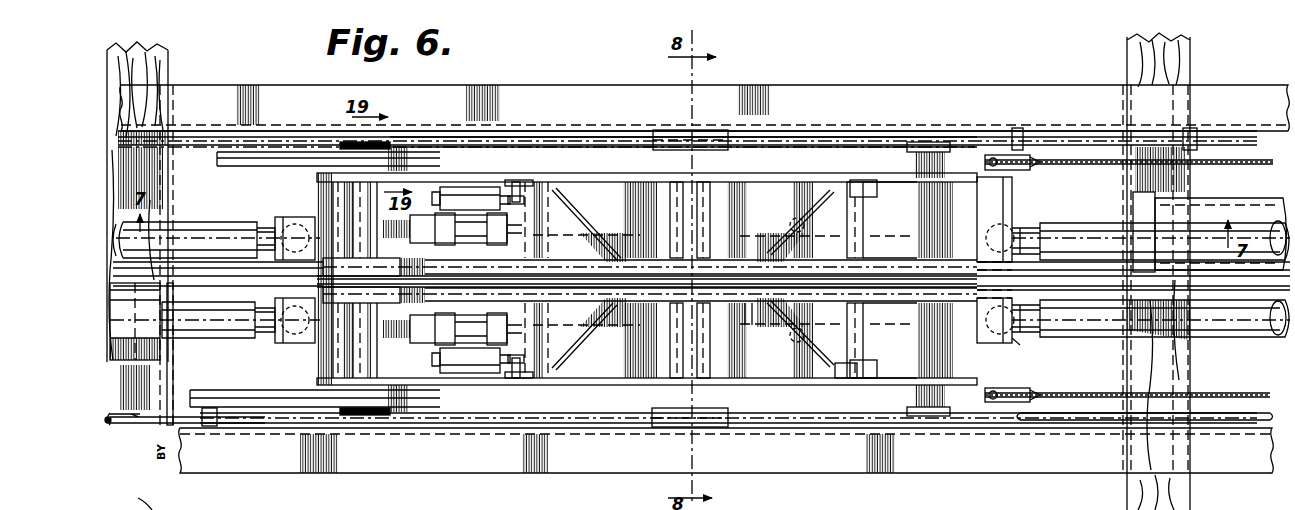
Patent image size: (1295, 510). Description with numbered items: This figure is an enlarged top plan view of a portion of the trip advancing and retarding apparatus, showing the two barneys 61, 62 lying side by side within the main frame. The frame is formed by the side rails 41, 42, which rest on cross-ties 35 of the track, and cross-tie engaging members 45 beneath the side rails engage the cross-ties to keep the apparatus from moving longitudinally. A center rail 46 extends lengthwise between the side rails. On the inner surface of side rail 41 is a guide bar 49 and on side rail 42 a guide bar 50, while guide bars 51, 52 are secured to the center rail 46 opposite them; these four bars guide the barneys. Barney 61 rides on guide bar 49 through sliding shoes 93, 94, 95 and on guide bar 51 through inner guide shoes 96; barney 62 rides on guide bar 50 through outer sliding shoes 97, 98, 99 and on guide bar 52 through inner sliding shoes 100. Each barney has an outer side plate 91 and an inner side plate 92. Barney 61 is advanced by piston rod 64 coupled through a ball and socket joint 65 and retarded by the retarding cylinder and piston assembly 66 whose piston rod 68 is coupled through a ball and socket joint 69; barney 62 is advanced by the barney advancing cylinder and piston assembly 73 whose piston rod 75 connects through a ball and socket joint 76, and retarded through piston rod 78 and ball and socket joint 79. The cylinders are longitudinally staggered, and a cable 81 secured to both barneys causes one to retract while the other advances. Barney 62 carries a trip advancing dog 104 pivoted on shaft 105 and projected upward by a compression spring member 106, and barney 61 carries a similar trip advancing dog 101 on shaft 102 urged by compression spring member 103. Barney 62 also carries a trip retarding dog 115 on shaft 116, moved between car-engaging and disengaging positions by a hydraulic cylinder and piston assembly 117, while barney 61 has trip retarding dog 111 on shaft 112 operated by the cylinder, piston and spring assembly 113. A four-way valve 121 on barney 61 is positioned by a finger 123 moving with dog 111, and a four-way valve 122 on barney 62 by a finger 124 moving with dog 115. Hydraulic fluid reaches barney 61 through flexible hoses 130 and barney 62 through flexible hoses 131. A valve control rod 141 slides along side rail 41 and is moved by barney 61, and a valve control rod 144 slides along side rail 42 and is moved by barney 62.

The cross-tie 35 is at (170, 64).
The side rail 42 is at (592, 87).
The side rail 41 is at (467, 463).
The valve control rod 144 is at (190, 148).
The flexible hoses 131 is at (243, 170).
The flexible hoses 130 is at (278, 393).
The outer sliding shoe 98 is at (390, 141).
The sliding shoe 95 is at (356, 415).
The guide bar 49 is at (473, 418).
The valve control rod 141 is at (240, 422).
The outer sliding shoe 97 is at (666, 150).
The sliding shoe 93 is at (722, 410).
The outer sliding shoe 99 is at (927, 140).
The sliding shoe 94 is at (908, 410).
The guide bar 50 is at (818, 140).
The barney 62 is at (750, 172).
The barney 61 is at (766, 392).
The outer side plate 91 is at (592, 174).
The guide bar 52 is at (195, 233).
The trip retarding dog 115 is at (590, 258).
The trip retarding dog 111 is at (613, 308).
The compression spring member 106 is at (800, 223).
The trip advancing dog 104 is at (762, 251).
The compression spring member 103 is at (800, 338).
The trip advancing dog 101 is at (746, 318).
The shaft 102 is at (838, 375).
The shaft 105 is at (863, 212).
The inner side plate 92 is at (882, 252).
The finger 124 is at (518, 182).
The shaft 116 is at (537, 178).
The finger 123 is at (514, 378).
The shaft 112 is at (548, 380).
The four-way valve 122 is at (471, 198).
The four-way valve 121 is at (471, 360).
The hydraulic cylinder and piston assembly 117 is at (452, 229).
The cylinder, piston and spring assembly 113 is at (435, 341).
The piston rod 78 is at (220, 231).
The ball and socket joint 79 is at (280, 222).
The inner sliding shoe 100 is at (318, 224).
The piston rod 68 is at (204, 329).
The center rail 46 is at (213, 293).
The ball and socket joint 69 is at (270, 340).
The inner guide shoe 96 is at (337, 298).
The retarding cylinder and piston assembly 66 is at (124, 370).
The cross-tie engaging member 45 is at (174, 380).
The piston rod 75 is at (1097, 223).
The ball and socket joint 76 is at (1018, 224).
The piston rod 64 is at (1098, 338).
The guide bar 51 is at (1068, 294).
The ball and socket joint 65 is at (1014, 340).
The barney advancing cylinder and piston assembly 73 is at (1222, 204).
The cable 81 is at (1098, 164).